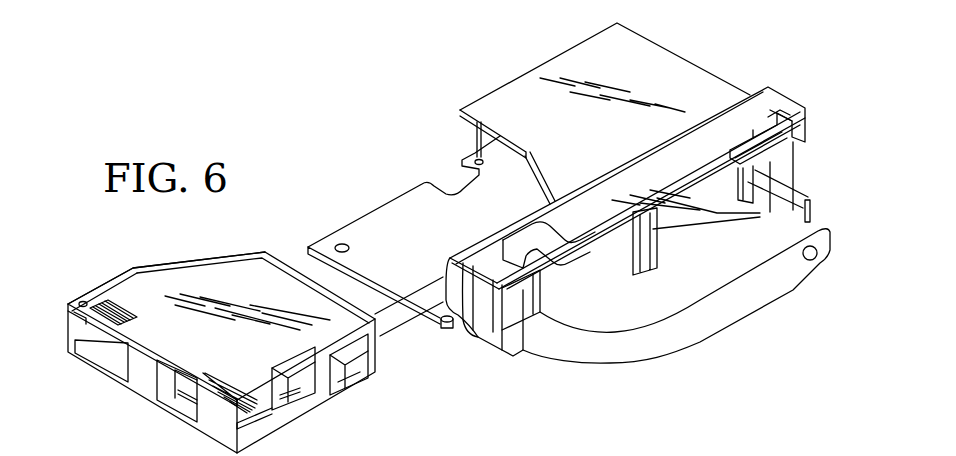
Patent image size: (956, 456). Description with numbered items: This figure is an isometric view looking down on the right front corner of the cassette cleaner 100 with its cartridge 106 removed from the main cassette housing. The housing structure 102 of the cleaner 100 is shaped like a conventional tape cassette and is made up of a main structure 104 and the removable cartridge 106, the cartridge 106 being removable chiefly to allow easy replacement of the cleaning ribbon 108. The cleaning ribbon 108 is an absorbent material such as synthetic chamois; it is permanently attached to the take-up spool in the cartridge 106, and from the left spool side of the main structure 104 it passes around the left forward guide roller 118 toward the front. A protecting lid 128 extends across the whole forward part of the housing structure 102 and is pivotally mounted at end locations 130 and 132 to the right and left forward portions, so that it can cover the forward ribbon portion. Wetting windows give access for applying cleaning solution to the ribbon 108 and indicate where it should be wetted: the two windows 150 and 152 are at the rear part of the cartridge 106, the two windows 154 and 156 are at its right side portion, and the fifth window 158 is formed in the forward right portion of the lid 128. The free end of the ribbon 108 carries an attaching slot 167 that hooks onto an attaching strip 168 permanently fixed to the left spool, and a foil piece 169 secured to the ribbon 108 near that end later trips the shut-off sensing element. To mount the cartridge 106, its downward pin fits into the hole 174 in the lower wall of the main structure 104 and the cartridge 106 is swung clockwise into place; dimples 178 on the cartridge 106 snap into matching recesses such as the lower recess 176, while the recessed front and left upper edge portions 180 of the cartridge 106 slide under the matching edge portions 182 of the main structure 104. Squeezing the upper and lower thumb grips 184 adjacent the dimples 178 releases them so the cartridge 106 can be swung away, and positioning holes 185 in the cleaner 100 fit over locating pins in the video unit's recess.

The cassette cleaner 100 is at (459, 357).
The housing structure 102 is at (484, 97).
The main structure 104 is at (636, 48).
The cartridge 106 is at (243, 270).
The cleaning ribbon 108 is at (607, 347).
The left forward guide roller 118 is at (746, 198).
The protecting lid 128 is at (663, 158).
The end location 130 is at (460, 307).
The end location 132 is at (793, 148).
The wetting window 150 is at (110, 360).
The wetting window 152 is at (183, 407).
The wetting window 154 is at (290, 407).
The wetting window 156 is at (350, 377).
The wetting window 158 is at (547, 232).
The attaching slot 167 is at (817, 208).
The attaching strip 168 is at (780, 184).
The foil piece 169 is at (803, 254).
The hole 174 is at (440, 330).
The lower recess 176 is at (468, 158).
The dimple 178 is at (81, 300).
The upper edge portion 180 is at (128, 276).
The edge portion 182 is at (510, 142).
The thumb grip 184 is at (137, 313).
The positioning hole 185 is at (339, 244).